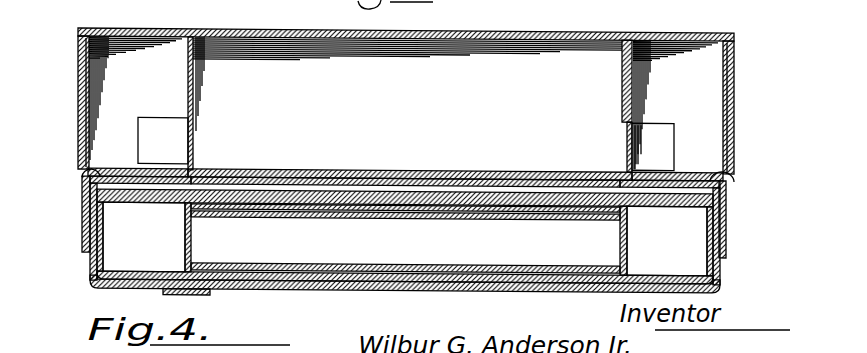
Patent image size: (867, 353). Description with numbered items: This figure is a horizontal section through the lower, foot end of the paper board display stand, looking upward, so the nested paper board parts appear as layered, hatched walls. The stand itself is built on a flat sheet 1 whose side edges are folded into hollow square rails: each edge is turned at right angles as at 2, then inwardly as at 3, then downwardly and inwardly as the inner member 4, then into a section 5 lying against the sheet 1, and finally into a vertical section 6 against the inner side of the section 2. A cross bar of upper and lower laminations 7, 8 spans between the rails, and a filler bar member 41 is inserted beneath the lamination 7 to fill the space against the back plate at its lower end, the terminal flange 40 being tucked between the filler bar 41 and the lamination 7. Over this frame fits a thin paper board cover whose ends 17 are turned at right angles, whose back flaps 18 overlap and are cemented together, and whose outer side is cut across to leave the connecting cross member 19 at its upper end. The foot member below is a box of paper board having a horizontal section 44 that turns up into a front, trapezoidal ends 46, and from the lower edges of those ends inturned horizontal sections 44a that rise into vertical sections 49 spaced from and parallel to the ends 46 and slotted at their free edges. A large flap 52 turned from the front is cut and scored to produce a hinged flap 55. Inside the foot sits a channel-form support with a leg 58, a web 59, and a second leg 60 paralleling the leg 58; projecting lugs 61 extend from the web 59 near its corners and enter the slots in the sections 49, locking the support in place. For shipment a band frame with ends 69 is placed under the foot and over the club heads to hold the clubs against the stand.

The flat sheet 1 is at (393, 271).
The right-angle turned section 2 is at (92, 220).
The inwardly turned section 3 is at (120, 170).
The inner member 4 is at (192, 240).
The section lying against sheet 5 is at (127, 270).
The vertical section 6 is at (103, 222).
The upper lamination 7 is at (380, 203).
The lower lamination 8 is at (415, 176).
The ends 17 is at (88, 258).
The back flaps 18 is at (200, 294).
The connecting cross member 19 is at (367, 177).
The terminal flange 40 is at (513, 212).
The filler bar member 41 is at (457, 236).
The horizontal section 44 is at (458, 32).
The inturned horizontal sections 44a is at (143, 28).
The ends 46 is at (88, 113).
The vertical sections 49 is at (193, 108).
The flap 52 is at (78, 168).
The flap 55 is at (420, 203).
The leg 58 is at (485, 177).
The web 59 is at (579, 50).
The second leg 60 is at (478, 45).
The projecting lugs 61 is at (153, 127).
The ends 69 is at (83, 97).